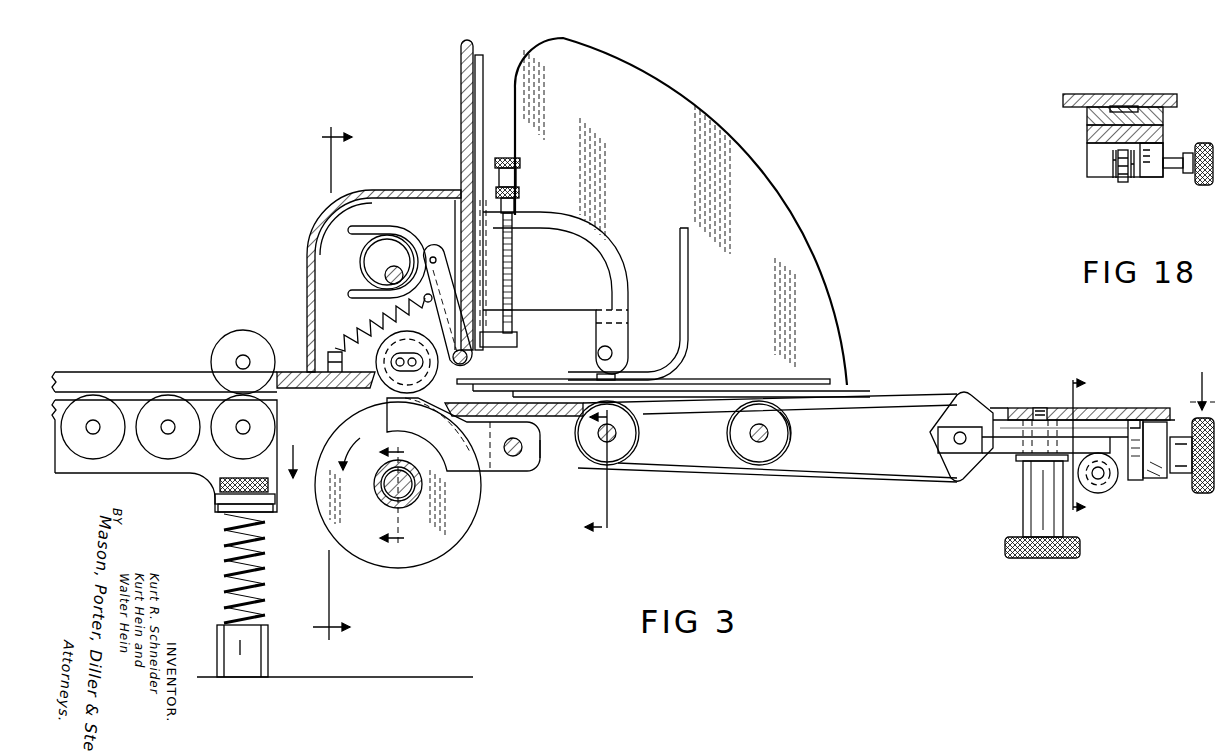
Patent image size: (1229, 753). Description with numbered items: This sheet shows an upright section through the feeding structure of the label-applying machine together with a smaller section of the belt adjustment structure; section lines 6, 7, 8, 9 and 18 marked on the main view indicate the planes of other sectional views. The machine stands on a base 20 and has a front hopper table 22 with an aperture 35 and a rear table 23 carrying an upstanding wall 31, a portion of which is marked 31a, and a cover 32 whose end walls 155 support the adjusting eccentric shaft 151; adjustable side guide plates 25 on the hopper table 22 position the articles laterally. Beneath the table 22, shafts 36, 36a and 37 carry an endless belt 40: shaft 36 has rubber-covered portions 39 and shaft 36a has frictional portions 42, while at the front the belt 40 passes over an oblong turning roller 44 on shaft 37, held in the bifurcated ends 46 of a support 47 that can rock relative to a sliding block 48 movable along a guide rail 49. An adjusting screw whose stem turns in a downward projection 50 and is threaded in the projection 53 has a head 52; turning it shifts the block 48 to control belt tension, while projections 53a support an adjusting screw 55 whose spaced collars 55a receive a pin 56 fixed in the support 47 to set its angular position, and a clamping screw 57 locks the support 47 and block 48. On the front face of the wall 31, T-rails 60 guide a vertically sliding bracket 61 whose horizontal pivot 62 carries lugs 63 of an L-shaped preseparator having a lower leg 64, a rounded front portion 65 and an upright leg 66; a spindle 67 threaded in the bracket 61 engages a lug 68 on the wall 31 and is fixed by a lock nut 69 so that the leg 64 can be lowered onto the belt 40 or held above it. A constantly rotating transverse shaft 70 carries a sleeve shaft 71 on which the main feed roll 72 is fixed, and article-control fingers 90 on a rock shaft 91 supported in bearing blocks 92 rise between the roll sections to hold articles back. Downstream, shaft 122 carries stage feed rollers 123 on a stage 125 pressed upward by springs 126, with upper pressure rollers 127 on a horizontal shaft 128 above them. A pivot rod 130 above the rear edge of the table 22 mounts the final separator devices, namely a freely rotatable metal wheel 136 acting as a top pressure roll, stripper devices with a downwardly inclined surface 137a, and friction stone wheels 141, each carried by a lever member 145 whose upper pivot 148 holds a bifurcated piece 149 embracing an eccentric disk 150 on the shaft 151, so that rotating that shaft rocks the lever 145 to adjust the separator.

In FIG. 3, the section line 6- 6 is at (750, 415).
In FIG. 3, the section line 7- 7 is at (400, 496).
In FIG. 3, the section line 8- 8 is at (606, 473).
In FIG. 3, the section line 9- 9 is at (323, 383).
In FIG. 3, the section line 18- 18 is at (1092, 446).
In FIG. 3, the base 20 is at (368, 685).
In FIG. 3, the front stack or hopper table 22 is at (1057, 407).
In FIG. 18, the front stack or hopper table 22 is at (1070, 93).
In FIG. 3, the rear table 23 is at (108, 372).
In FIG. 3, the adjustable side guide plates 25 is at (712, 120).
In FIG. 3, the upstanding wall 31 is at (467, 44).
In FIG. 3, the bar portion 31a is at (453, 247).
In FIG. 3, the cover 32 is at (323, 222).
In FIG. 3, the aperture 35 is at (995, 408).
In FIG. 3, the shaft 36 is at (609, 443).
In FIG. 3, the shaft 36a is at (762, 443).
In FIG. 3, the shaft 37 is at (958, 445).
In FIG. 3, the non-slipping portions 39 is at (638, 440).
In FIG. 3, the endless belt 40 is at (885, 393).
In FIG. 3, the frictional portions 42 is at (791, 441).
In FIG. 3, the oblong turning roller 44 is at (955, 410).
In FIG. 3, the bifurcated ends 46 is at (952, 440).
In FIG. 3, the support 47 is at (1007, 447).
In FIG. 18, the support 47 is at (1087, 135).
In FIG. 3, the sliding block 48 is at (1113, 427).
In FIG. 18, the sliding block 48 is at (1087, 116).
In FIG. 3, the guide rail 49 is at (1136, 424).
In FIG. 18, the guide rail 49 is at (1119, 106).
In FIG. 3, the downward projection 50 is at (1157, 479).
In FIG. 18, the downward projection 50 is at (1090, 164).
In FIG. 3, the adjusting screw head 52 is at (1200, 488).
In FIG. 3, the projection 53 is at (1136, 481).
In FIG. 18, the projections 53a is at (1151, 172).
In FIG. 3, the adjusting screw 55 is at (1105, 493).
In FIG. 18, the adjusting screw 55 is at (1200, 143).
In FIG. 18, the spaced collars 55a is at (1134, 170).
In FIG. 18, the pin 56 is at (1123, 183).
In FIG. 3, the clamping screw 57 is at (1045, 561).
In FIG. 3, the T-rails 60 is at (485, 58).
In FIG. 3, the vertically sliding bracket 61 is at (577, 240).
In FIG. 3, the horizontal pivot 62 is at (612, 348).
In FIG. 3, the lugs 63 is at (616, 376).
In FIG. 3, the lower leg 64 is at (524, 380).
In FIG. 3, the front portion 65 is at (682, 364).
In FIG. 3, the upright leg 66 is at (689, 281).
In FIG. 3, the spindle 67 is at (512, 248).
In FIG. 3, the projecting lug 68 is at (517, 340).
In FIG. 3, the lock nut 69 is at (520, 163).
In FIG. 3, the transverse shaft 70 is at (416, 496).
In FIG. 3, the sleeve shaft 71 is at (392, 499).
In FIG. 3, the main feed roll 72 is at (347, 530).
In FIG. 3, the article-control fingers 90 is at (463, 434).
In FIG. 3, the rock shaft 91 is at (514, 458).
In FIG. 3, the bearing blocks 92 is at (536, 456).
In FIG. 3, the shaft 122 is at (270, 418).
In FIG. 3, the stage feed rollers 123 is at (251, 426).
In FIG. 3, the stage 125 is at (158, 438).
In FIG. 3, the springs 126 is at (100, 450).
In FIG. 3, the upper pressure rollers 127 is at (226, 348).
In FIG. 3, the horizontal shaft 128 is at (249, 355).
In FIG. 3, the pivot 130 is at (467, 358).
In FIG. 3, the metal wheel 136 is at (386, 380).
In FIG. 3, the downwardly inclined surface 137a is at (430, 394).
In FIG. 3, the friction stone wheels 141 is at (380, 340).
In FIG. 3, the lever member 145 is at (396, 298).
In FIG. 3, the pivot 148 is at (433, 250).
In FIG. 3, the bifurcated piece 149 is at (363, 229).
In FIG. 3, the eccentric disk 150 is at (372, 252).
In FIG. 3, the adjusting eccentric shaft 151 is at (385, 276).
In FIG. 3, the end walls 155 is at (370, 213).